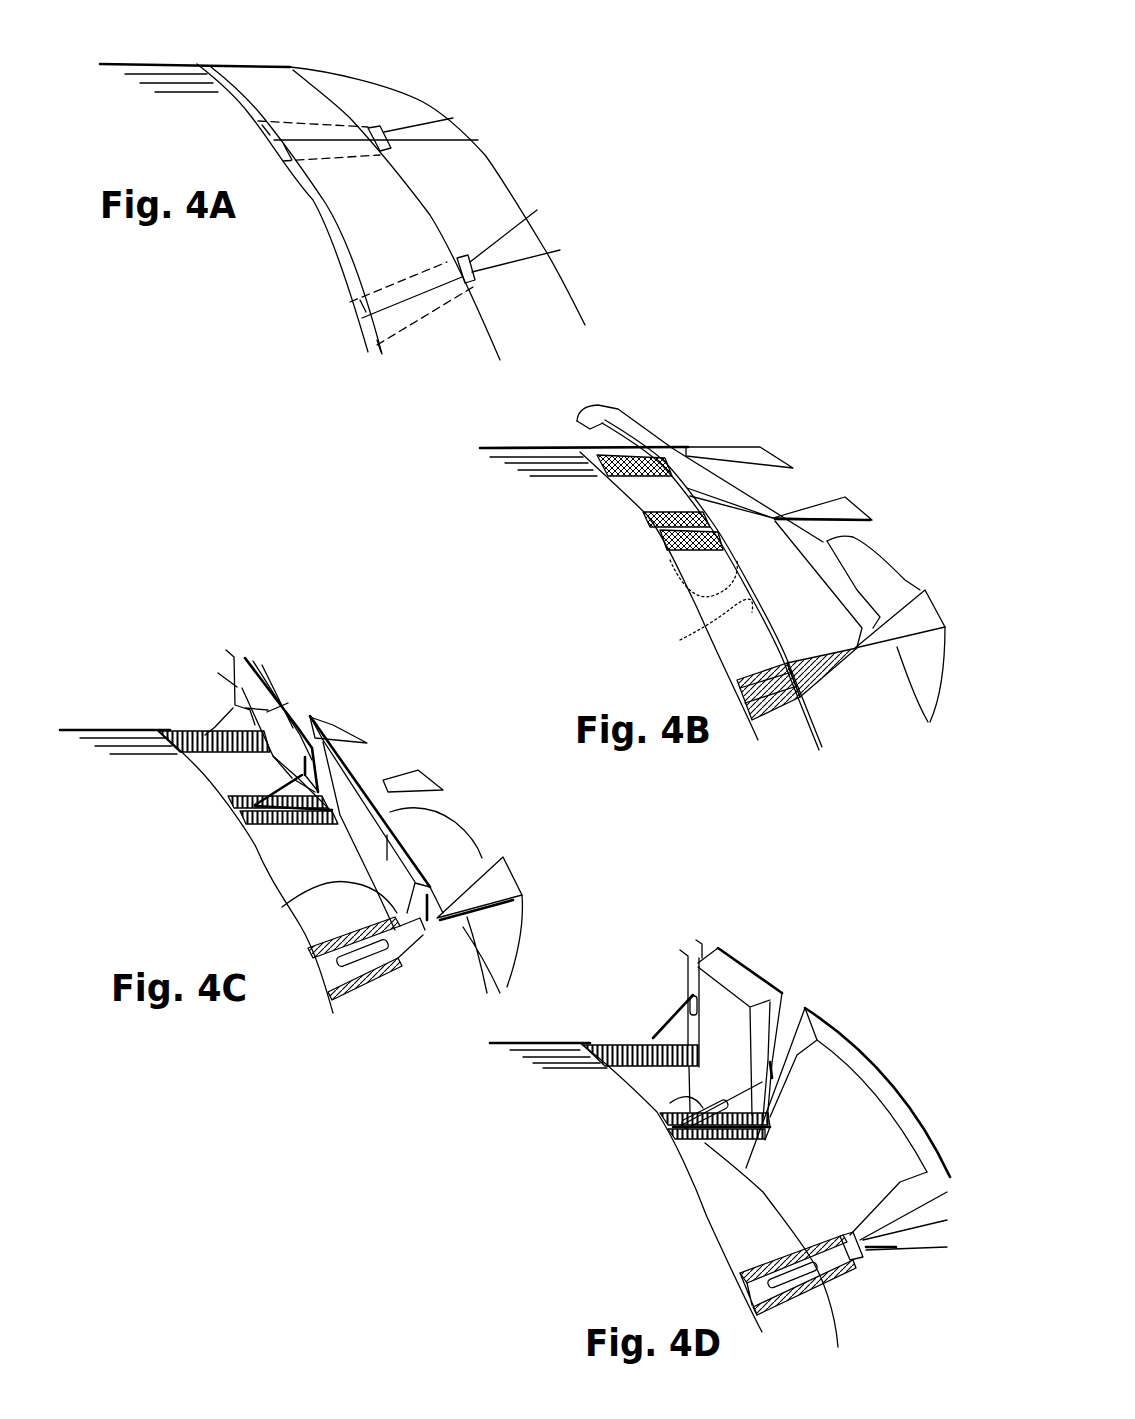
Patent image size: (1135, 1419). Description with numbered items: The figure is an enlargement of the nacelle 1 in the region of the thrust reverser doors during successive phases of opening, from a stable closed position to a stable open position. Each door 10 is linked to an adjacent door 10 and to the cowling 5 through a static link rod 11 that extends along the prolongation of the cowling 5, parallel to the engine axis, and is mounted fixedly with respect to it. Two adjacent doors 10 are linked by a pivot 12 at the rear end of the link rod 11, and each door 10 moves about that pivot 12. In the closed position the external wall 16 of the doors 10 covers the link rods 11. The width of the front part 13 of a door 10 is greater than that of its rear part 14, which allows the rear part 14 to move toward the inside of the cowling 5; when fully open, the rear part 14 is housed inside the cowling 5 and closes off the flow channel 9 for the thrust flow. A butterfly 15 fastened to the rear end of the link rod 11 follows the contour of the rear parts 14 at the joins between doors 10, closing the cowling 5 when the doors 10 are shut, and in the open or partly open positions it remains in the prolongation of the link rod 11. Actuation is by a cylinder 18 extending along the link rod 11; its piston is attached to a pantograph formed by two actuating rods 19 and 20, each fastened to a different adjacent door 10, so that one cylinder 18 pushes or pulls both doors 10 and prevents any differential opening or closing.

In FIG. 4D, the nacelle 1 is at (833, 1125).
In FIG. 4A, the cowling 5 is at (256, 268).
In FIG. 4B, the cowling 5 is at (613, 548).
In FIG. 4C, the cowling 5 is at (213, 897).
In FIG. 4D, the cowling 5 is at (601, 1209).
In FIG. 4D, the flow channel 9 is at (730, 1197).
In FIG. 4B, the door 10 is at (672, 443).
In FIG. 4C, the door 10 is at (264, 698).
In FIG. 4D, the door 10 is at (851, 1186).
In FIG. 4A, the static link rod 11 is at (307, 130).
In FIG. 4B, the static link rod 11 is at (687, 553).
In FIG. 4C, the static link rod 11 is at (357, 985).
In FIG. 4D, the static link rod 11 is at (693, 1140).
In FIG. 4A, the pivot 12 is at (390, 140).
In FIG. 4D, the pivot 12 is at (873, 1260).
In FIG. 4A, the front part 13 is at (333, 252).
In FIG. 4B, the front part 13 is at (710, 647).
In FIG. 4A, the rear part 14 is at (502, 188).
In FIG. 4B, the rear part 14 is at (838, 588).
In FIG. 4D, the rear part 14 is at (793, 1200).
In FIG. 4A, the butterfly 15 is at (537, 237).
In FIG. 4B, the butterfly 15 is at (842, 505).
In FIG. 4C, the butterfly 15 is at (413, 778).
In FIG. 4D, the external wall 16 is at (847, 1058).
In FIG. 4C, the cylinder 18 is at (363, 953).
In FIG. 4D, the cylinder 18 is at (643, 1045).
In FIG. 4C, the actuating rod 19 is at (448, 920).
In FIG. 4D, the actuating rod 19 is at (697, 1025).
In FIG. 4C, the actuating rod 20 is at (345, 905).
In FIG. 4D, the actuating rod 20 is at (690, 998).